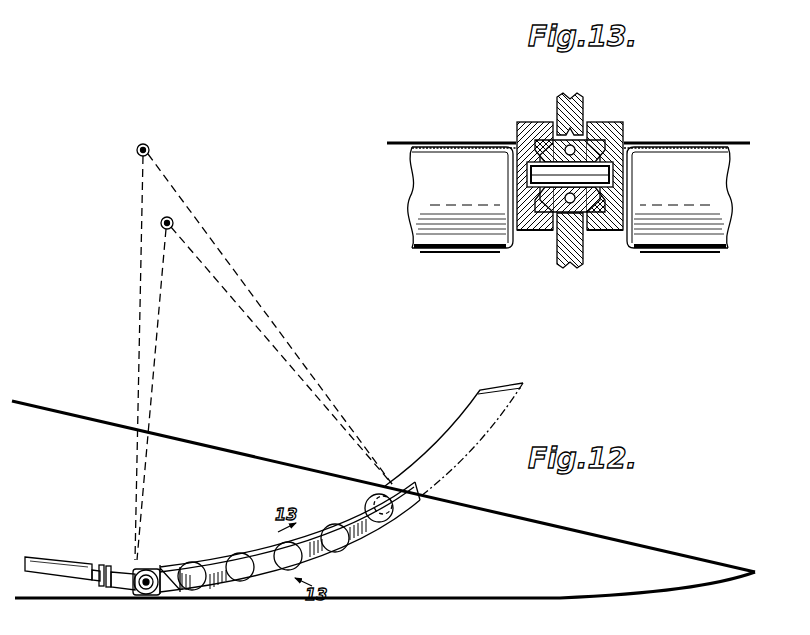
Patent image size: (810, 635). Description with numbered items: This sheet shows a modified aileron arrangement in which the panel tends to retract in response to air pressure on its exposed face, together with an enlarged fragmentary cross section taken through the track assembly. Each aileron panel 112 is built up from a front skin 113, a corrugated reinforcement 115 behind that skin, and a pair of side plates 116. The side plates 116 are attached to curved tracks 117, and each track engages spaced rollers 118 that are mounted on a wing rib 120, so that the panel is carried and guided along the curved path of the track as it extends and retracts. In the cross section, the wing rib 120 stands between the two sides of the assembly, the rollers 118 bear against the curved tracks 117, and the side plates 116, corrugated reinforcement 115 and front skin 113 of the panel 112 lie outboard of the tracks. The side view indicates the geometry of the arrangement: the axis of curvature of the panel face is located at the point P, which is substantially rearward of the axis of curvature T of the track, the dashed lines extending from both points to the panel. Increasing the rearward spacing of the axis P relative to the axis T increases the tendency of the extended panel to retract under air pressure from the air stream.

In FIG. 13, the aileron panel 112 is at (425, 136).
In FIG. 12, the aileron panel 112 is at (316, 535).
In FIG. 13, the front skin 113 is at (487, 141).
In FIG. 12, the front skin 113 is at (222, 557).
In FIG. 13, the corrugated reinforcement 115 is at (420, 214).
In FIG. 12, the corrugated reinforcement 115 is at (370, 527).
In FIG. 13, the side plates 116 is at (513, 192).
In FIG. 12, the side plates 116 is at (325, 560).
In FIG. 13, the curved tracks 117 is at (537, 122).
In FIG. 12, the curved tracks 117 is at (248, 550).
In FIG. 13, the rollers 118 is at (532, 232).
In FIG. 12, the rollers 118 is at (410, 497).
In FIG. 13, the wing rib 120 is at (567, 255).
In FIG. 12, the axis of curvature of the track T is at (137, 148).
In FIG. 12, the axis of curvature of the panel face P is at (161, 224).